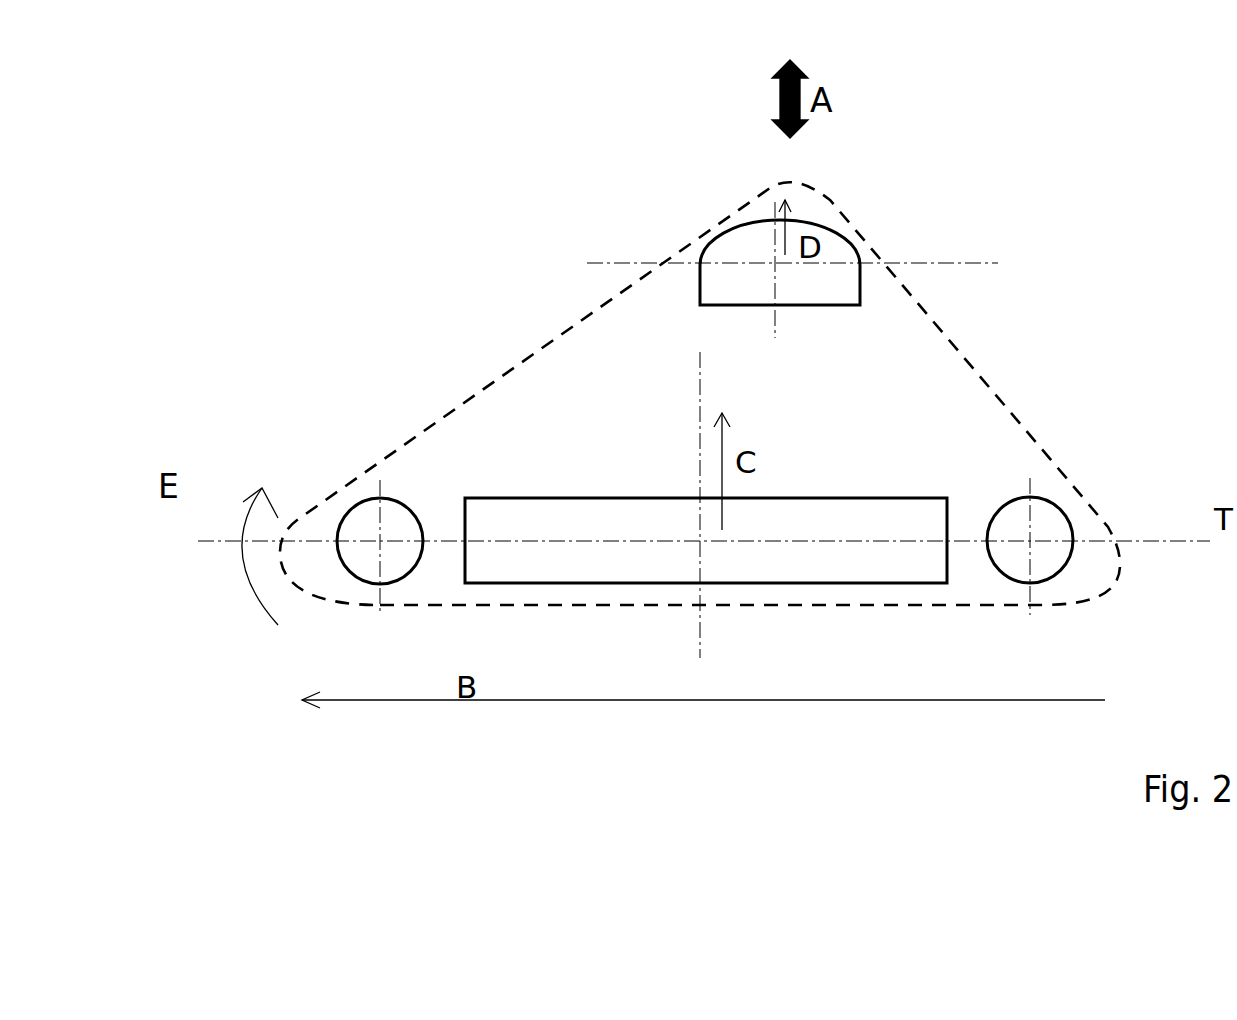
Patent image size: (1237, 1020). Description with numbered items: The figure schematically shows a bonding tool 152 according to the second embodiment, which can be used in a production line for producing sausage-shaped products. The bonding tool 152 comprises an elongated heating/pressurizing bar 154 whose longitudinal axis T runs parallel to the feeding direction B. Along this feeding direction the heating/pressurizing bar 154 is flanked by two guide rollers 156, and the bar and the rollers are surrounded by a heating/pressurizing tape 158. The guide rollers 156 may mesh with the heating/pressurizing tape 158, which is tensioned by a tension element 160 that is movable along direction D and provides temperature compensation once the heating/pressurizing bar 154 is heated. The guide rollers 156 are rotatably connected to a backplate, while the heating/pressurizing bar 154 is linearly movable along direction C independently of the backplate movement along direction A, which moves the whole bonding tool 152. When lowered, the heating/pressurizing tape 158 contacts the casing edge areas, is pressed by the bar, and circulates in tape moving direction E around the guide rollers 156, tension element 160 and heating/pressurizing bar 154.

The bonding tool 152 is at (704, 404).
The heating/pressurizing bar 154 is at (817, 562).
The guide rollers 156 is at (372, 533).
The heating/pressurizing tape 158 is at (997, 392).
The tension element 160 is at (733, 253).